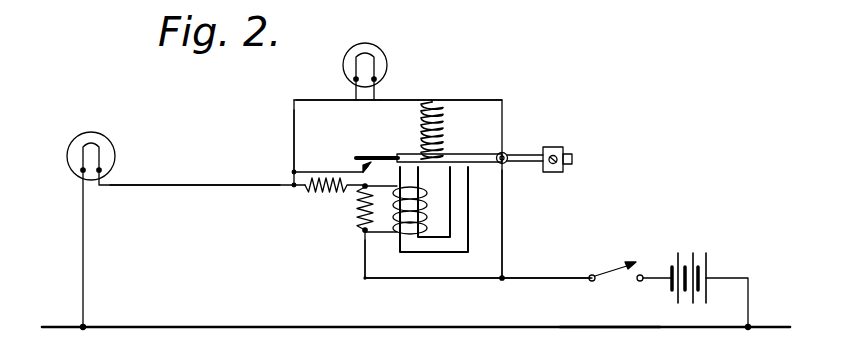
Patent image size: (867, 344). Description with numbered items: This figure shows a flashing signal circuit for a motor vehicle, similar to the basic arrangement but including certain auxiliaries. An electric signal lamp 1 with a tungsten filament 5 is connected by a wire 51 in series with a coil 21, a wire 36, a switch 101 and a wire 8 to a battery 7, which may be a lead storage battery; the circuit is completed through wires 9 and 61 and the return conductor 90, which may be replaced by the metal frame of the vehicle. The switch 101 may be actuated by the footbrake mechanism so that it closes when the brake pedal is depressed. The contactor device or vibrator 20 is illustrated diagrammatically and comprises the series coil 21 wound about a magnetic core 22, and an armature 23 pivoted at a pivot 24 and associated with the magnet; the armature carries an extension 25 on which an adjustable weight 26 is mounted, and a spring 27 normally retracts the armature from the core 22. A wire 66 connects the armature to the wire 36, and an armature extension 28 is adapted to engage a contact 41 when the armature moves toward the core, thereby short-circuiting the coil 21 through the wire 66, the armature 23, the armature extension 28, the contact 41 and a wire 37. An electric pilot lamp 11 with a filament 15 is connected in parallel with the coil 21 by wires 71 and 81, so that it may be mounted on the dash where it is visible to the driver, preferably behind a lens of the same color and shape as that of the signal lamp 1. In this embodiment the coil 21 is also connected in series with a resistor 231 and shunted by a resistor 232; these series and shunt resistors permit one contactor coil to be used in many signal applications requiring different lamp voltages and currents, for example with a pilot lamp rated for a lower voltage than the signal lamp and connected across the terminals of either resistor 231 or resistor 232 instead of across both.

The electric signal lamp 1 is at (113, 149).
The filament 5 is at (82, 152).
The battery 7 is at (694, 259).
The wire 8 is at (658, 280).
The wire 9 is at (748, 300).
The electric pilot lamp 11 is at (362, 42).
The filament 15 is at (356, 65).
The contactor device or vibrator 20 is at (468, 217).
The series coil 21 is at (393, 218).
The magnetic core 22 is at (433, 254).
The armature 23 is at (413, 154).
The pivot 24 is at (507, 151).
The extension 25 is at (575, 160).
The adjustable weight 26 is at (553, 147).
The spring 27 is at (447, 123).
The armature extension 28 is at (382, 153).
The wire 36 is at (365, 276).
The wire 37 is at (311, 172).
The contact 41 is at (368, 168).
The wire 51 is at (187, 187).
The wire 61 is at (83, 273).
The wire 66 is at (502, 243).
The wire 71 is at (294, 125).
The wire 81 is at (395, 100).
The ground line 90 is at (593, 329).
The switch 101 is at (618, 268).
The series resistor 231 is at (300, 196).
The shunt resistor 232 is at (358, 213).